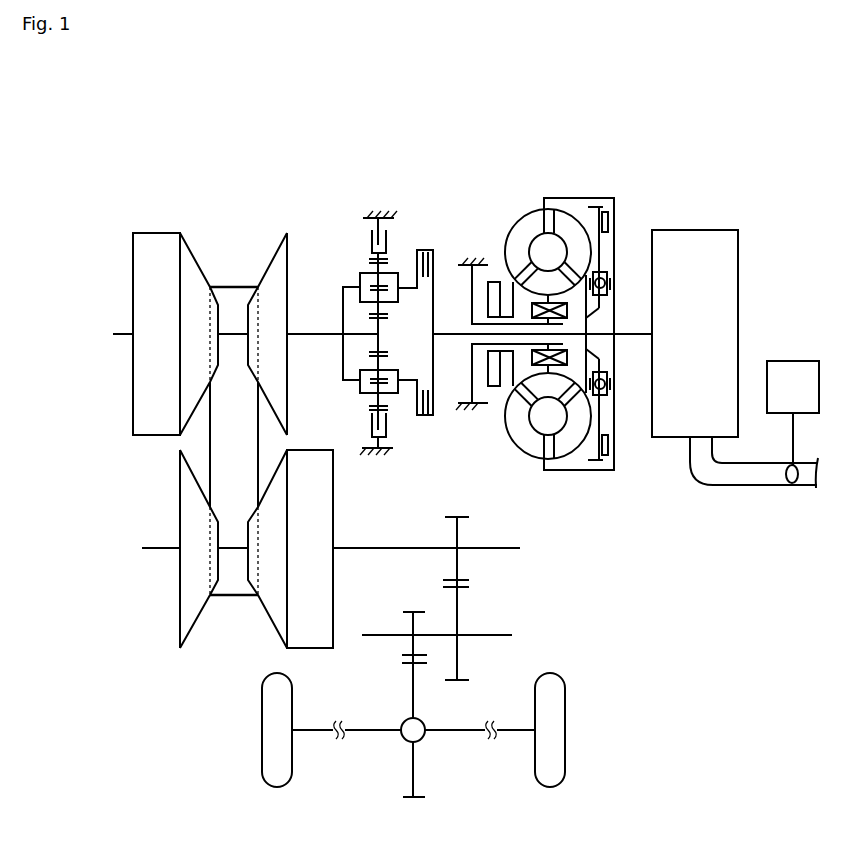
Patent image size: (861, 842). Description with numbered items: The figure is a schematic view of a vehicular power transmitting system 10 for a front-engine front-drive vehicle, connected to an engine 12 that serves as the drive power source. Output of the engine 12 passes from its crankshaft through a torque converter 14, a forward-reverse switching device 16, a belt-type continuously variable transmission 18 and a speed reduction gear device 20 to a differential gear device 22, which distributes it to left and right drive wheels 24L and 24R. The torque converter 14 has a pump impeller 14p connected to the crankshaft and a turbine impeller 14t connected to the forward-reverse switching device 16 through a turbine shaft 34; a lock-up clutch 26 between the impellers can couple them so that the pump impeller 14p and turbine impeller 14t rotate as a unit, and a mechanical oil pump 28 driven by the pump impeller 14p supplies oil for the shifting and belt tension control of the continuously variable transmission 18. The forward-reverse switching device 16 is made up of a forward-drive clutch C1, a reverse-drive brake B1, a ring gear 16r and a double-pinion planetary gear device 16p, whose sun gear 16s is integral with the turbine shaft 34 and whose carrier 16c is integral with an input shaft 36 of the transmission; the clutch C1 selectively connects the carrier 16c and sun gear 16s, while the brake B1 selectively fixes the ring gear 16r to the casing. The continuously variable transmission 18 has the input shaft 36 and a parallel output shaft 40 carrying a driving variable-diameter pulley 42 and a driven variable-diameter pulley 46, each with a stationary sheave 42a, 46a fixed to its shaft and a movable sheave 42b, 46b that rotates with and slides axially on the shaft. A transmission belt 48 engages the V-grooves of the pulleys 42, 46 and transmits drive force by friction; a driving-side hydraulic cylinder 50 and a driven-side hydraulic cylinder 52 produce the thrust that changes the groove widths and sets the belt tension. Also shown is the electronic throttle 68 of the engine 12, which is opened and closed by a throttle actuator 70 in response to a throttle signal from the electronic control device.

The vehicular power transmitting system 10 is at (553, 123).
The engine 12 is at (730, 290).
The torque converter 14 is at (550, 178).
The pump impeller 14p is at (522, 440).
The turbine impeller 14t is at (565, 445).
The forward-reverse switching device 16 is at (403, 178).
The carrier 16c is at (358, 281).
The planetary gear device 16p is at (365, 210).
The ring gear 16r is at (372, 416).
The sun gear 16s is at (372, 343).
The continuously variable transmission 18 is at (223, 650).
The reduction gear mechanism 20 is at (520, 600).
The differential gear device 22 is at (404, 739).
The left drive wheel 24L is at (268, 753).
The right drive wheel 24R is at (558, 743).
The lock-up clutch 26 is at (608, 220).
The mechanical oil pump 28 is at (493, 288).
The turbine shaft 34 is at (442, 337).
The input shaft 36 is at (303, 337).
The output shaft 40 is at (393, 550).
The driving variable-diameter pulley 42 is at (157, 442).
The stationary sheave 42a is at (275, 263).
The movable sheave 42b is at (188, 263).
The driven variable-diameter pulley 46 is at (172, 655).
The stationary sheave 46a is at (187, 608).
The movable sheave 46b is at (275, 605).
The transmission belt 48 is at (235, 285).
The driving-side hydraulic cylinder 50 is at (143, 252).
The driven-side hydraulic cylinder 52 is at (327, 530).
The electronic throttle actuator 68 is at (795, 480).
The exhaust sensor unit 70 is at (800, 360).
The reverse-drive brake B1 is at (364, 241).
The forward-drive clutch C1 is at (415, 325).